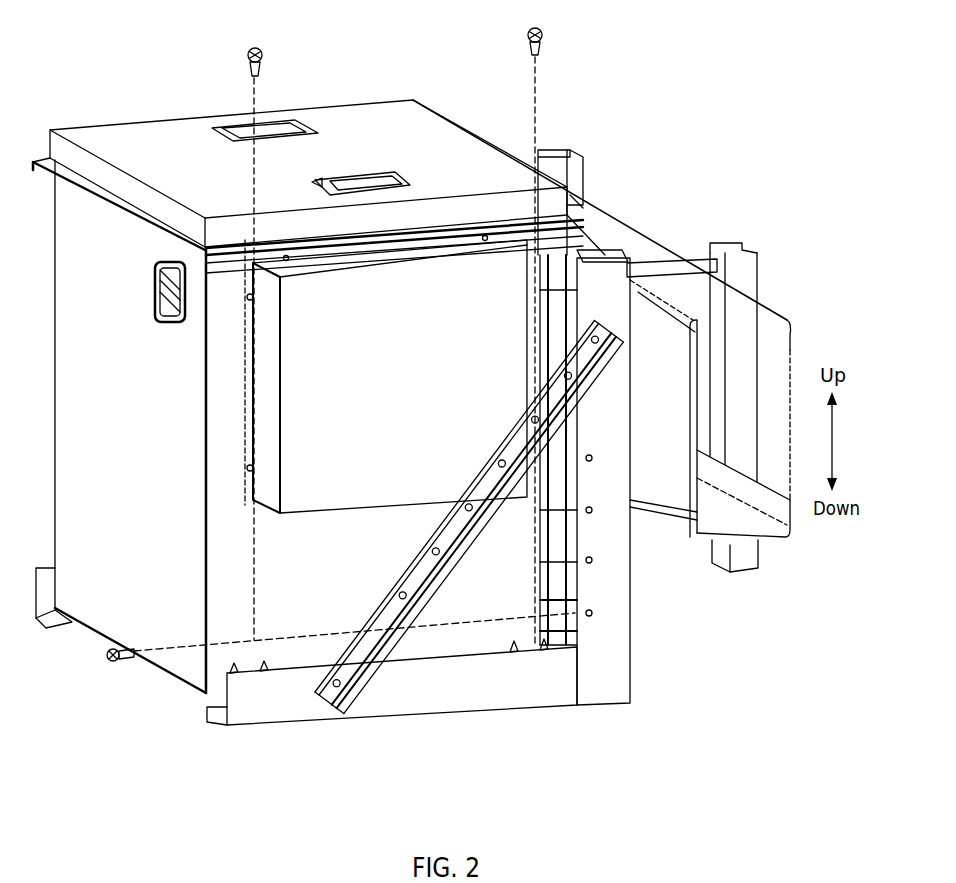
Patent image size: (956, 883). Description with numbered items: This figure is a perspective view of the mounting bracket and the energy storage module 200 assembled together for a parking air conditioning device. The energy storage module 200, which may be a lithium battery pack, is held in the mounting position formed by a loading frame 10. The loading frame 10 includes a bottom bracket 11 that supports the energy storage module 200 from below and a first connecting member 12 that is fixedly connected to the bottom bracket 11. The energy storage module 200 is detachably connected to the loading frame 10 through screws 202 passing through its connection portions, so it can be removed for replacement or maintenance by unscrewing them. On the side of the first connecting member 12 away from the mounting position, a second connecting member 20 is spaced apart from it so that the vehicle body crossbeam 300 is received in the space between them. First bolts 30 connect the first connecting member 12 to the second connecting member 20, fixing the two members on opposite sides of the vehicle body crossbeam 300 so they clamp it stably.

The loading frame 10 is at (460, 458).
The bottom bracket 11 is at (493, 680).
The first connecting member 12 is at (610, 622).
The second connecting member 20 is at (740, 277).
The first bolt 30 is at (673, 262).
The energy storage module 200 is at (164, 157).
The screw 202 is at (263, 54).
The vehicle body crossbeam 300 is at (607, 232).